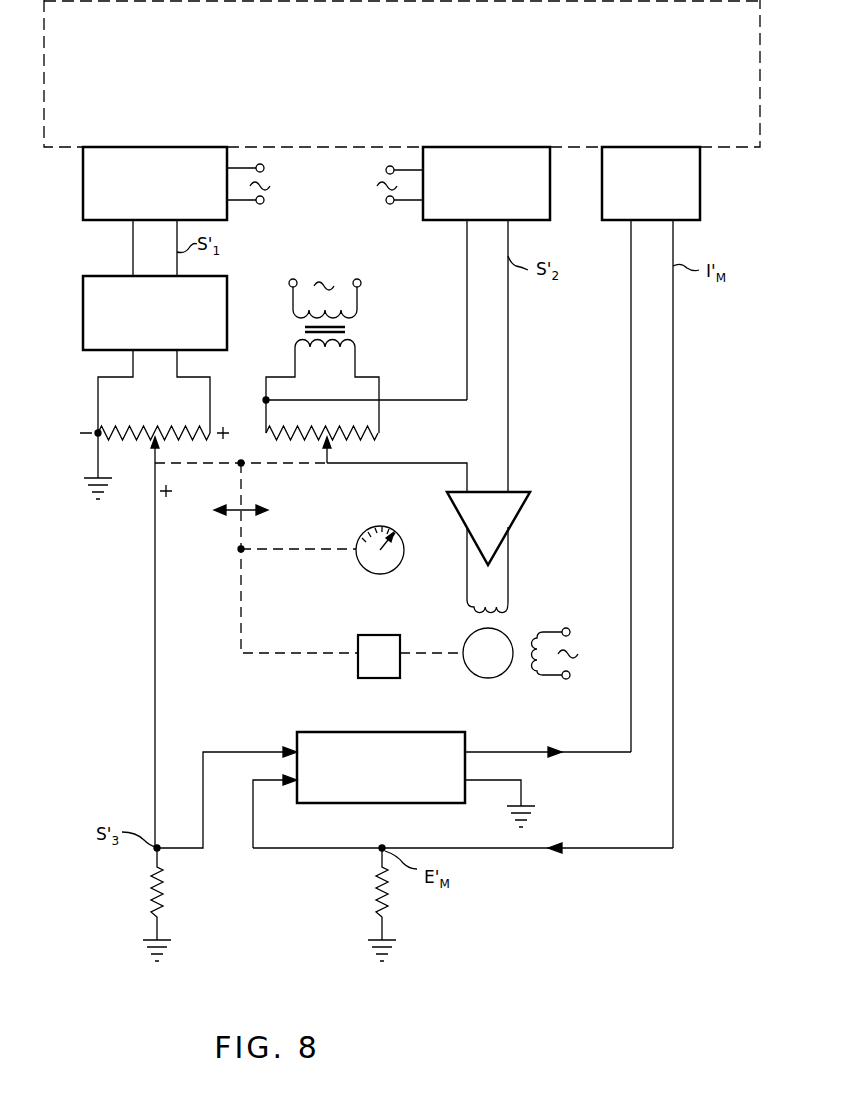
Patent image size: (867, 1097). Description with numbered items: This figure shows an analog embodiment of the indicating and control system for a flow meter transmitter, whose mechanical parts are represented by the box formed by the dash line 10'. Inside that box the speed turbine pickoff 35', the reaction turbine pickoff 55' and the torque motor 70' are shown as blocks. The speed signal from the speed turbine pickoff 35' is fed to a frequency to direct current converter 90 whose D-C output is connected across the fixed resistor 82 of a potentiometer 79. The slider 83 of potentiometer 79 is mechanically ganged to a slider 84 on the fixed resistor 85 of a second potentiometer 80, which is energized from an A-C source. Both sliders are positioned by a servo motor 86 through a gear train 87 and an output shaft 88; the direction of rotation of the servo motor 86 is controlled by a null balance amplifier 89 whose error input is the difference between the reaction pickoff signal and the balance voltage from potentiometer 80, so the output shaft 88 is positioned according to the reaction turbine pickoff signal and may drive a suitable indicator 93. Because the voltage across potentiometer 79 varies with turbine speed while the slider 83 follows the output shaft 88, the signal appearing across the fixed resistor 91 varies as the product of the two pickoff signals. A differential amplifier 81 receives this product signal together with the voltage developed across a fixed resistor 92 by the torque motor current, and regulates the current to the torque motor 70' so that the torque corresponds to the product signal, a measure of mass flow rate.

The dash line box (transmitter mechanical parts) 10' is at (402, 73).
The speed turbine pickoff 35' is at (149, 183).
The reaction turbine pickoff 55' is at (463, 201).
The torque motor 70' is at (679, 183).
The frequency to direct current converter 90 is at (83, 312).
The potentiometer 79 is at (129, 430).
The fixed resistor 82 is at (140, 440).
The slider 83 is at (162, 461).
The potentiometer 80 is at (322, 356).
The fixed resistor 85 is at (285, 438).
The slider 84 is at (334, 460).
The null balance amplifier 89 is at (515, 508).
The indicator 93 is at (388, 572).
The output shaft 88 is at (244, 656).
The gear train 87 is at (378, 678).
The servo motor 86 is at (500, 673).
The differential amplifier 81 is at (445, 732).
The fixed resistor 91 is at (165, 893).
The fixed resistor 92 is at (375, 897).